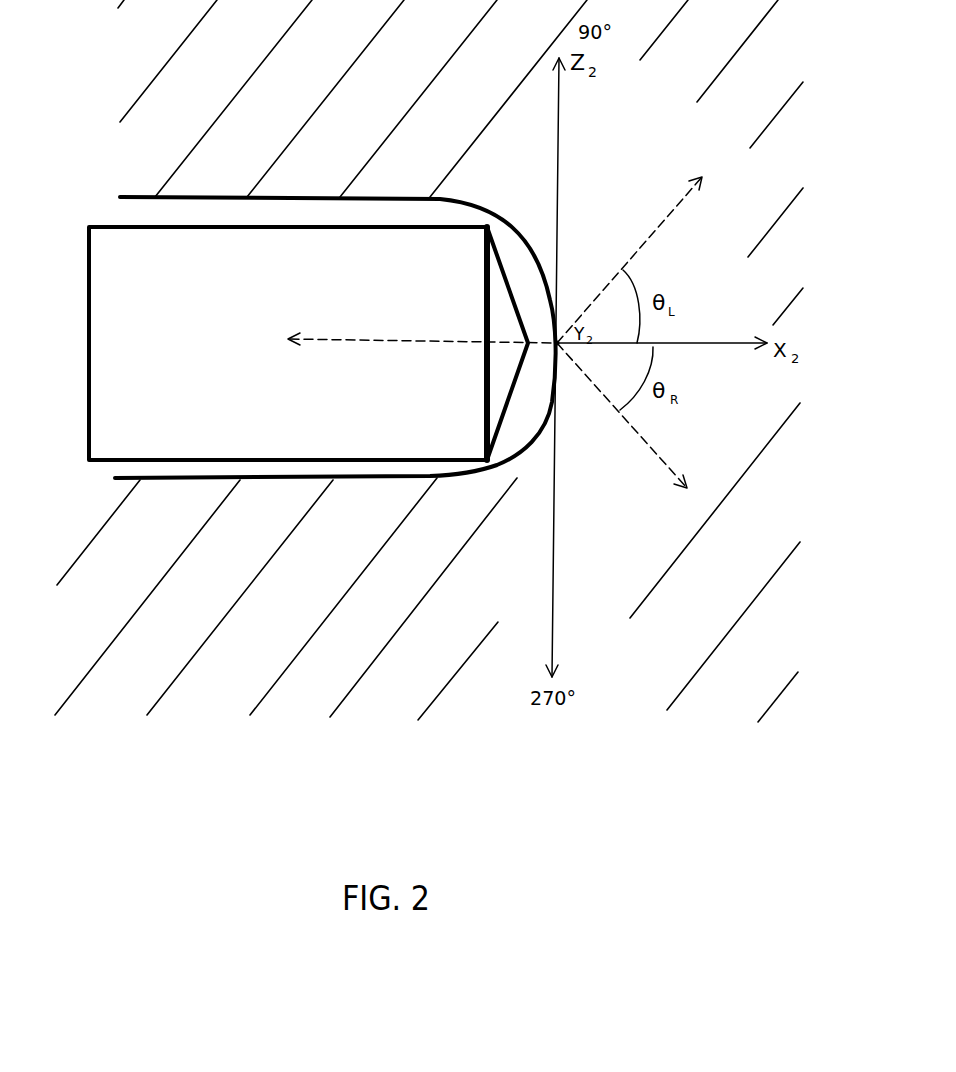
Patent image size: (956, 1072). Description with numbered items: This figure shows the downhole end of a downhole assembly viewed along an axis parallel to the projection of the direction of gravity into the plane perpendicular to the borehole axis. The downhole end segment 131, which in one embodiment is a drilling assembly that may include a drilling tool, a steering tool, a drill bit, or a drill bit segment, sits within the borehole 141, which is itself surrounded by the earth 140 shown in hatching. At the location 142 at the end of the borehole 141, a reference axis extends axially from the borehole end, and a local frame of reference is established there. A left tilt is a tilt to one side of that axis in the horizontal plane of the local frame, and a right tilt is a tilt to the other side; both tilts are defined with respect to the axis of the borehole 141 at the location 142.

The earth 140 is at (321, 78).
The borehole 141 is at (313, 464).
The downhole end segment 131 is at (395, 467).
The location 142 is at (558, 340).